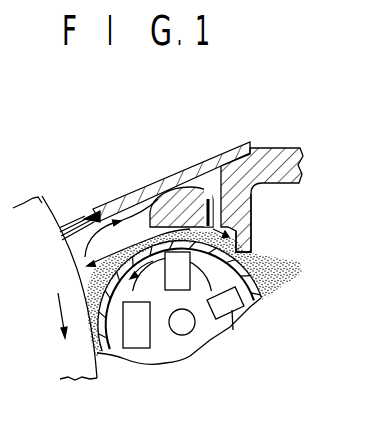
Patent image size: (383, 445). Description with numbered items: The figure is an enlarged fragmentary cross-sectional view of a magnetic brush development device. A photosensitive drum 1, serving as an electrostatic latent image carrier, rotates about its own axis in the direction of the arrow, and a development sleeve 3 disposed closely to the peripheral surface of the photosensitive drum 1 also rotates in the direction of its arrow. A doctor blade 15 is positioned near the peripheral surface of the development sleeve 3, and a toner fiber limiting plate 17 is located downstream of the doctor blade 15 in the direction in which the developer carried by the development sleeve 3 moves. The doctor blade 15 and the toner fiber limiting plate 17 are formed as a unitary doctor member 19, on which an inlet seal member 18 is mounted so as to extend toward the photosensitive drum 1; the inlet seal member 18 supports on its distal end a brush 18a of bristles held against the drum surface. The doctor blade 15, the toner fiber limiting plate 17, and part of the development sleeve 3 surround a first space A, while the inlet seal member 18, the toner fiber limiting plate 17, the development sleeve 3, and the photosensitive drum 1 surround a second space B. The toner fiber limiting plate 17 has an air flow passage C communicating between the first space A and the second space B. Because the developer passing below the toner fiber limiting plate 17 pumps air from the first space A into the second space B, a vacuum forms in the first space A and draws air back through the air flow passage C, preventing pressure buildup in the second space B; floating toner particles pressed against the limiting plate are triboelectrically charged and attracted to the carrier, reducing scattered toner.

The photosensitive drum 1 is at (45, 205).
The development sleeve 3 is at (261, 300).
The doctor blade 15 is at (254, 244).
The toner fiber limiting plate 17 is at (131, 204).
The inlet seal member 18 is at (170, 178).
The brush 18a is at (83, 224).
The doctor member 19 is at (272, 150).
The first space A is at (236, 240).
The second space B is at (93, 274).
The air flow passage C is at (218, 204).